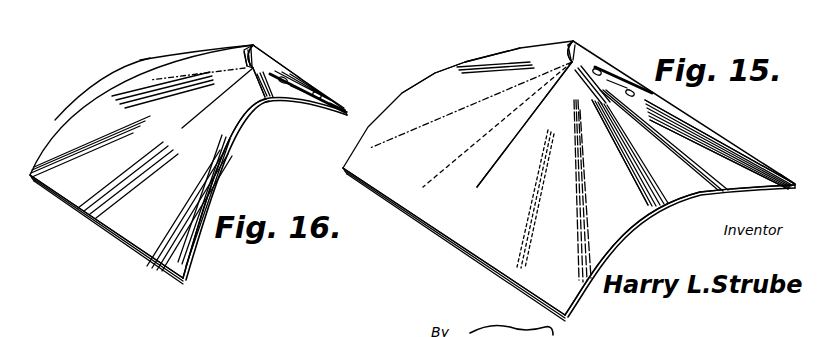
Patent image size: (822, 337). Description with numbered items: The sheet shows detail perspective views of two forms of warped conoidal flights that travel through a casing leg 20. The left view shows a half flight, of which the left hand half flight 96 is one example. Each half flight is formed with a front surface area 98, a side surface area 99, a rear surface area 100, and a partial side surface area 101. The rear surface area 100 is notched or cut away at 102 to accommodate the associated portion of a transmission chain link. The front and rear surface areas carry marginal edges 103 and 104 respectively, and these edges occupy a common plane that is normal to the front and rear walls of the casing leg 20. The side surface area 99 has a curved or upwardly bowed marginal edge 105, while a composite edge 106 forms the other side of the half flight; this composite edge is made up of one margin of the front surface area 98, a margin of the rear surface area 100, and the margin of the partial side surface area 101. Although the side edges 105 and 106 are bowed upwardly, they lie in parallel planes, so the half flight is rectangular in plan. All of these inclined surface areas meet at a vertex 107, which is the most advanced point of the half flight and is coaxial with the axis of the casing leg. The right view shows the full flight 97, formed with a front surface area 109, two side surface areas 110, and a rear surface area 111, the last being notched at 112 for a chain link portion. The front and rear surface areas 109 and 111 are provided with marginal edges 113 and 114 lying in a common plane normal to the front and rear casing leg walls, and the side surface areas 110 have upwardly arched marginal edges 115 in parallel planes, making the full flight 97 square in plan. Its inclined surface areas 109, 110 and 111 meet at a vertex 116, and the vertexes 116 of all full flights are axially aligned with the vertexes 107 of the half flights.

In FIG. 16, the casing leg 20 is at (77, 6).
In FIG. 15, the casing leg 20 is at (453, 12).
In FIG. 16, the left hand half flight 96 is at (29, 178).
In FIG. 15, the full flight 97 is at (342, 170).
In FIG. 16, the front surface area 98 is at (136, 209).
In FIG. 16, the side surface area 99 is at (175, 63).
In FIG. 16, the rear surface area 100 is at (258, 61).
In FIG. 16, the partial side surface area 101 is at (266, 103).
In FIG. 16, the notch 102 is at (340, 100).
In FIG. 16, the marginal edge 103 is at (117, 233).
In FIG. 16, the marginal edge 104 is at (303, 72).
In FIG. 16, the curved marginal edge 105 is at (143, 72).
In FIG. 16, the composite edge 106 is at (226, 156).
In FIG. 16, the vertex 107 is at (240, 50).
In FIG. 15, the front surface area 109 is at (493, 197).
In FIG. 15, the side surface areas 110 is at (480, 88).
In FIG. 15, the rear surface area 111 is at (723, 152).
In FIG. 15, the notch 112 is at (654, 98).
In FIG. 15, the marginal edge 113 is at (443, 231).
In FIG. 15, the marginal edge 114 is at (785, 170).
In FIG. 15, the curved marginal edges 115 is at (455, 67).
In FIG. 15, the vertex 116 is at (566, 52).